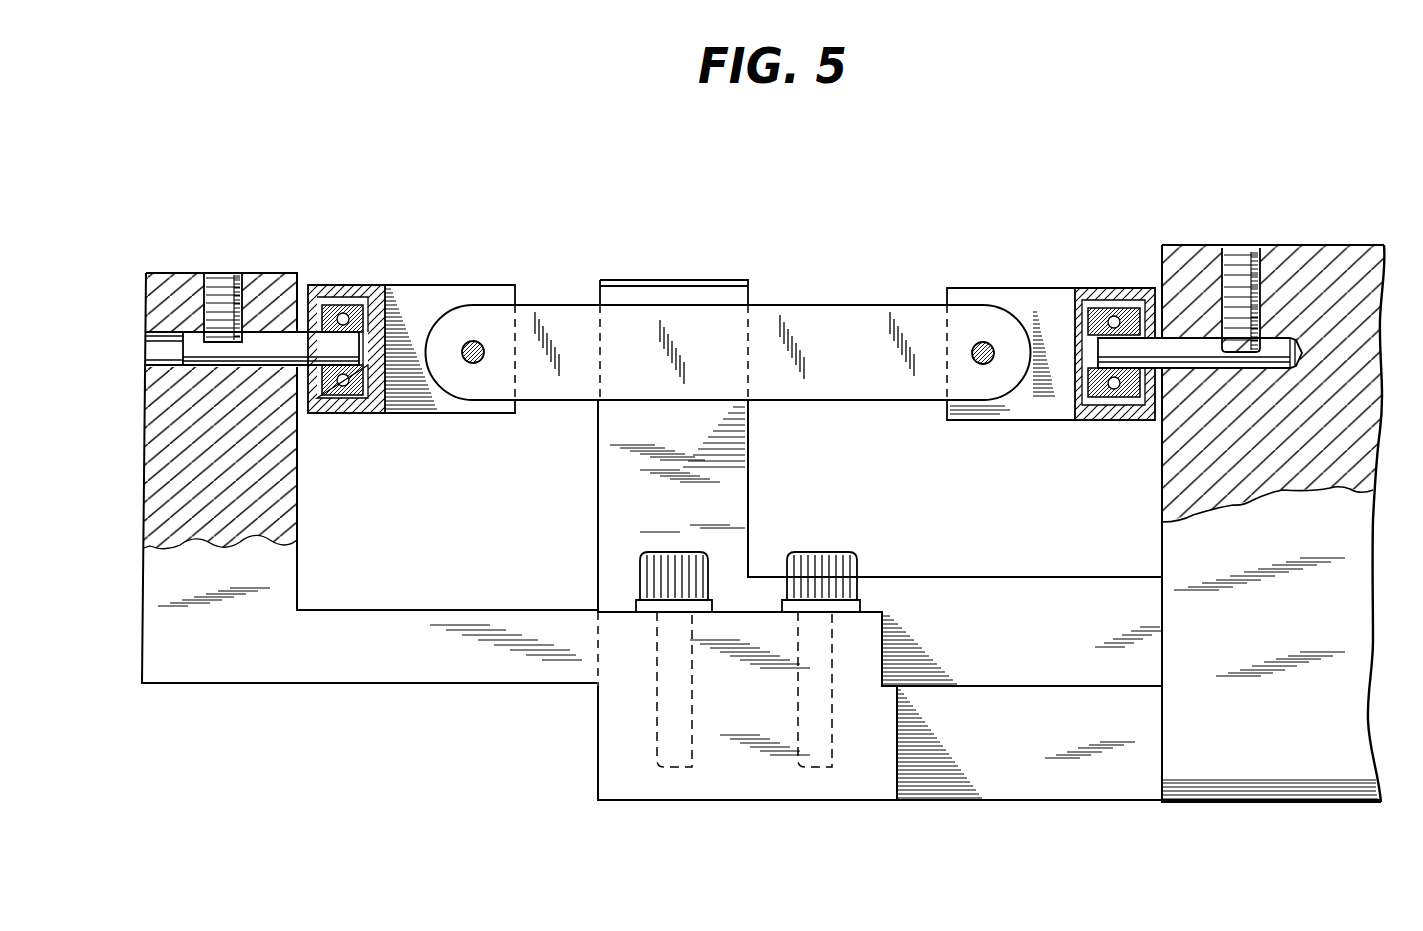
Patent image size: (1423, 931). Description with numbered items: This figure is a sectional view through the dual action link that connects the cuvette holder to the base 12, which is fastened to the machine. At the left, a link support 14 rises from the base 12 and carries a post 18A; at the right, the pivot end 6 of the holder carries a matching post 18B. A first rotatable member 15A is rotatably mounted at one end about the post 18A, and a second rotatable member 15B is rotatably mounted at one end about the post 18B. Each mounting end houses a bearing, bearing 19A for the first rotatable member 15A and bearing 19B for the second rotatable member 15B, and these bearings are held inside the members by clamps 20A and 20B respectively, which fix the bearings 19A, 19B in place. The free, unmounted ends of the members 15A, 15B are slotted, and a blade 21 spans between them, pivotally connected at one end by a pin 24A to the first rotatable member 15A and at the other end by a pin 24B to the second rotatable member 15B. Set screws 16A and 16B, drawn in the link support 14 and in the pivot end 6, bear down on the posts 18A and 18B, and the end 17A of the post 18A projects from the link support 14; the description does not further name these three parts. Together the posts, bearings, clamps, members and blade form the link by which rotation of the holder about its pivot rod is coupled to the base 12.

The pivot end 6 is at (1363, 305).
The base 12 is at (935, 577).
The link support 14 is at (297, 580).
The first rotatable member 15A is at (460, 285).
The second rotatable member 15B is at (1040, 288).
The set screw 16A is at (225, 273).
The set screw 16B is at (1245, 248).
The shaft end 17A is at (158, 355).
The post 18A is at (272, 343).
The post 18B is at (1277, 345).
The bearing 19A is at (352, 290).
The bearing 19B is at (1113, 302).
The clamp 20A is at (318, 293).
The clamp 20B is at (1142, 297).
The blade 21 is at (818, 305).
The pin 24A is at (478, 348).
The pin 24B is at (978, 345).